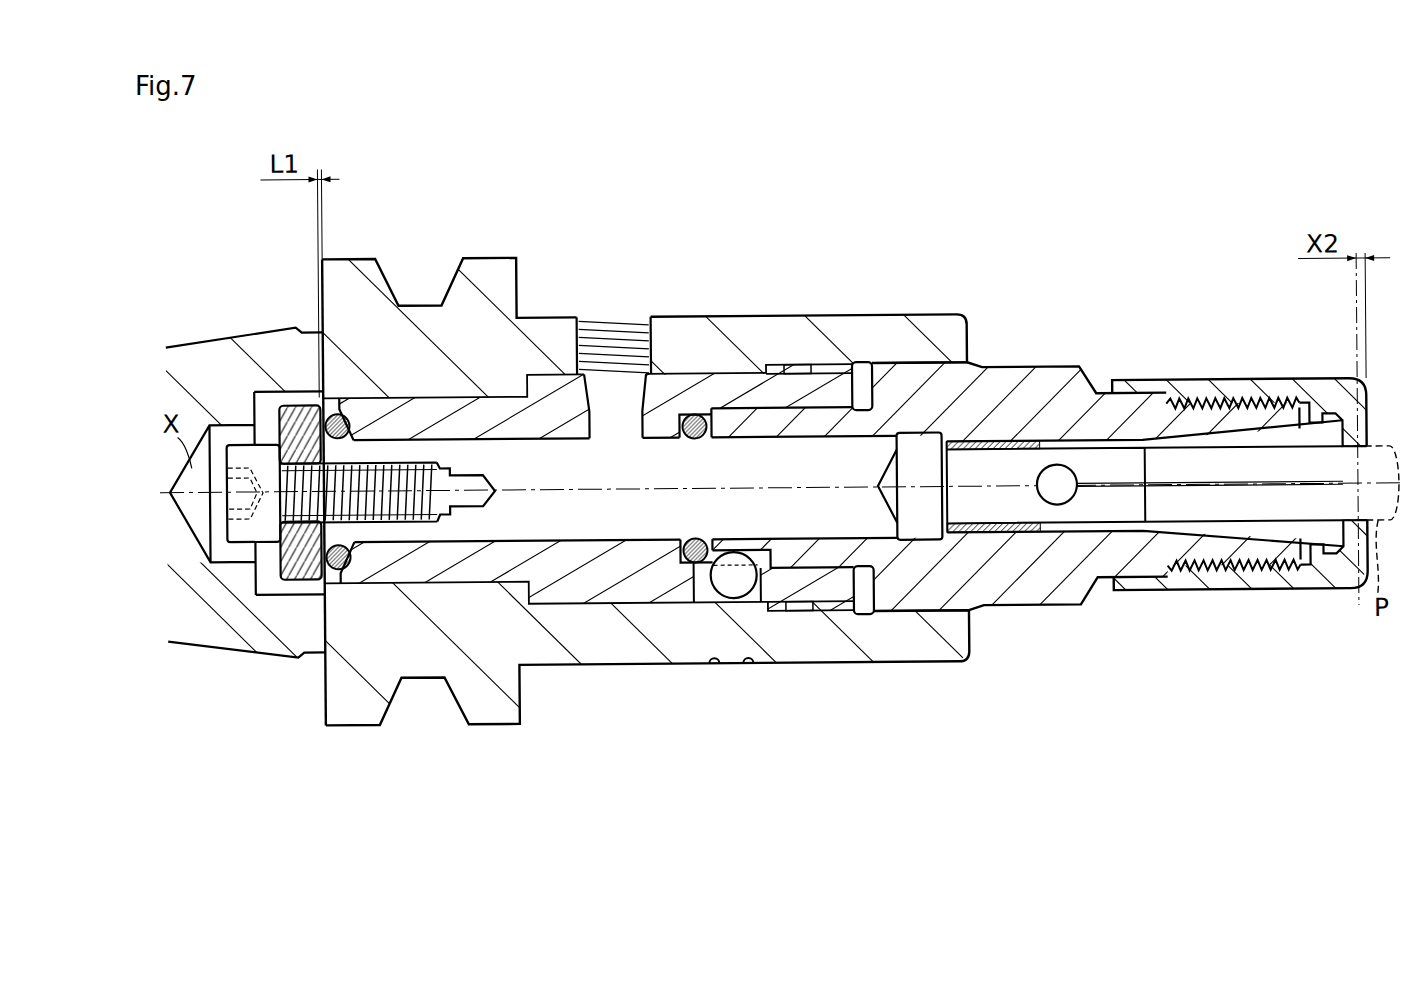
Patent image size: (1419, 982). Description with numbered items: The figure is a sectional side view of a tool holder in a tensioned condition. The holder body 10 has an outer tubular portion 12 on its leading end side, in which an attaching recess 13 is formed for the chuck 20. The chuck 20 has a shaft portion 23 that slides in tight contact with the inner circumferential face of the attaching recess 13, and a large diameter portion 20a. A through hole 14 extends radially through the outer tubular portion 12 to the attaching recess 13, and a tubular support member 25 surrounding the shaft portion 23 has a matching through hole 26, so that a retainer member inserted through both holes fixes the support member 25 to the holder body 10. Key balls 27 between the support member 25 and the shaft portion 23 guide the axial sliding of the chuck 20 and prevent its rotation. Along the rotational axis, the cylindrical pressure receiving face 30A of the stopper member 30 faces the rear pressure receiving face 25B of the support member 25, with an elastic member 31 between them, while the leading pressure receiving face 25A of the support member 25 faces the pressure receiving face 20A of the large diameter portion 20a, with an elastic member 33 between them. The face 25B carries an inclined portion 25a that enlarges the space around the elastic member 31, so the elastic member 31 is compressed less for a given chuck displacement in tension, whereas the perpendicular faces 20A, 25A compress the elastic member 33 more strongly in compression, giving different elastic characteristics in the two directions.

The holder body 10 is at (211, 334).
The outer tubular portion 12 is at (933, 322).
The attaching recess 13 is at (268, 586).
The through hole 14 is at (585, 318).
The chuck 20 is at (1034, 362).
The pressure receiving face 20A is at (697, 444).
The large diameter portion 20a is at (737, 420).
The shaft portion 23 is at (558, 534).
The support member 25 is at (793, 387).
The pressure receiving face 25A is at (713, 410).
The pressure receiving face 25B is at (332, 597).
The inclined portion 25a is at (384, 419).
The through hole 26 is at (634, 389).
The key balls 27 is at (723, 590).
The stopper member 30 is at (290, 415).
The pressure receiving face 30A is at (262, 534).
The elastic member 31 is at (331, 408).
The elastic member 33 is at (701, 540).